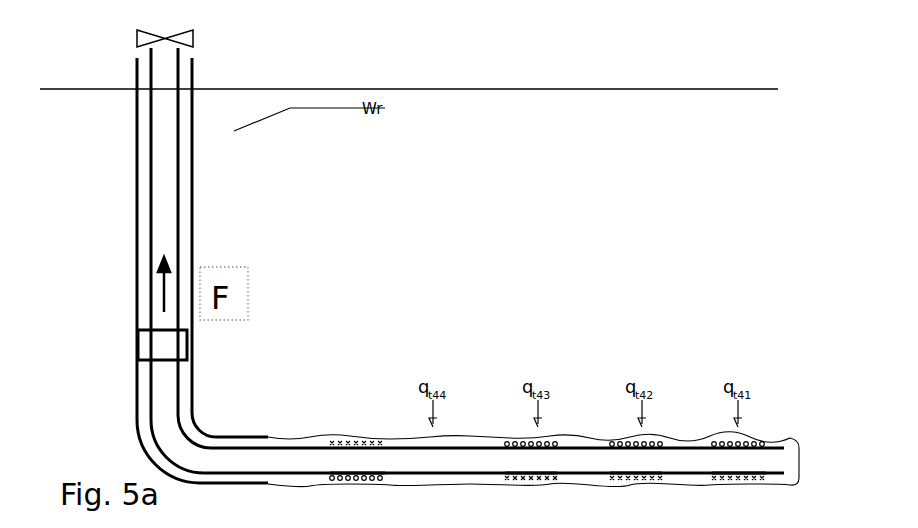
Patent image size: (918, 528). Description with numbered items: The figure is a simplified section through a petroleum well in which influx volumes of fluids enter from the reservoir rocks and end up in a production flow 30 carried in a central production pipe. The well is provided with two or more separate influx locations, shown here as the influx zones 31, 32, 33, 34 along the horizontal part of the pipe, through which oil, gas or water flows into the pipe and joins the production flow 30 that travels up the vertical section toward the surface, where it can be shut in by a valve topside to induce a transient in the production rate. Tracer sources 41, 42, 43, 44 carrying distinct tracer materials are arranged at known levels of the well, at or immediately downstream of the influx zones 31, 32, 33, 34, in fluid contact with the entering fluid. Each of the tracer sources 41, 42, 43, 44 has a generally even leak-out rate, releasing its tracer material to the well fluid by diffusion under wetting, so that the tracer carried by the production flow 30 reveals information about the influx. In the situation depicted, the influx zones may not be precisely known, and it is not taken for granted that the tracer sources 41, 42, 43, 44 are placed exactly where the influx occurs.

The production flow 30 is at (192, 47).
The influx zone 31 is at (739, 495).
The influx zone 32 is at (636, 495).
The influx zone 33 is at (531, 495).
The influx zone 34 is at (357, 495).
The tracer source 41 is at (726, 442).
The tracer source 42 is at (627, 442).
The tracer source 43 is at (522, 442).
The tracer source 44 is at (347, 442).